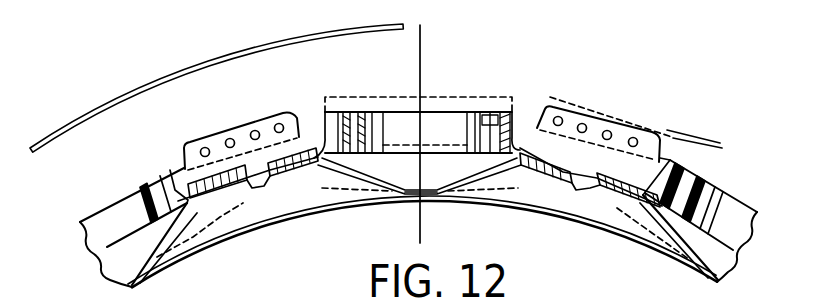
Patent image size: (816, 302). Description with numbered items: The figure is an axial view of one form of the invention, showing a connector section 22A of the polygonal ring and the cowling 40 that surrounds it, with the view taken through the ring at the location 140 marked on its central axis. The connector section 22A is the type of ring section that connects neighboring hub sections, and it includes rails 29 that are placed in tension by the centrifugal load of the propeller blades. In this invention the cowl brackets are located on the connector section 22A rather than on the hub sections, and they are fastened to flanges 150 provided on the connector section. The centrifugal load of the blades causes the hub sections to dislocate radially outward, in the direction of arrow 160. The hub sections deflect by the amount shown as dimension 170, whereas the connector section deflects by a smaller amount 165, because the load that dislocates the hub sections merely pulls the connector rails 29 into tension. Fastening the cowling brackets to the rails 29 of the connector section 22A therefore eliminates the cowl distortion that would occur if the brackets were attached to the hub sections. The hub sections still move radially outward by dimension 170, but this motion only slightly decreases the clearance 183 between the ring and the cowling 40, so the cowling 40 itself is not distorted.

The cowling 40 is at (207, 61).
The flanges 150 is at (273, 114).
The connector section 22A is at (547, 53).
The deflection amount of connector sections 165 is at (695, 173).
The rails 29 is at (256, 168).
The clearance 183 is at (383, 112).
The dimension 170 is at (307, 63).
The arrow 160 is at (420, 25).
The neck 140 is at (419, 229).